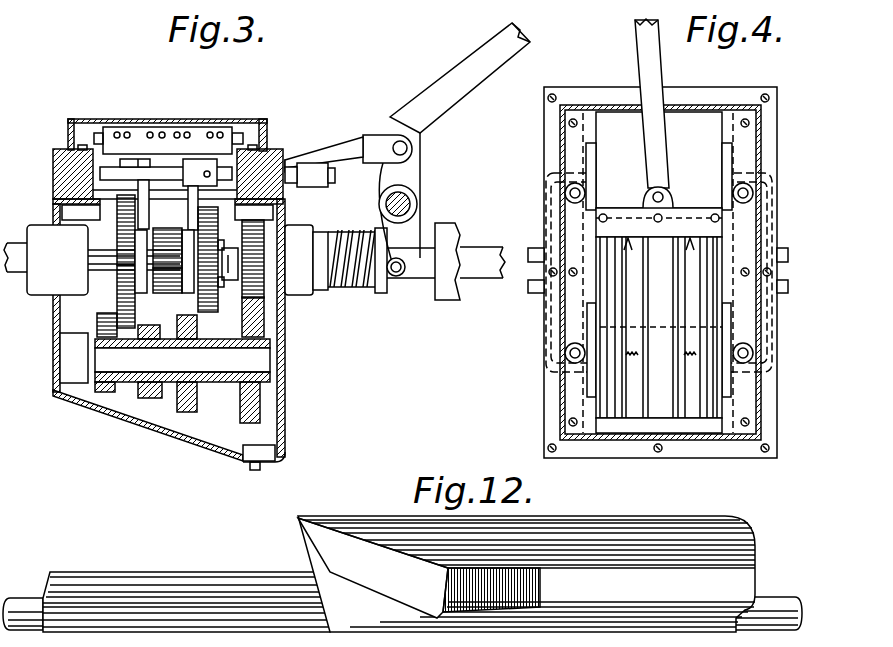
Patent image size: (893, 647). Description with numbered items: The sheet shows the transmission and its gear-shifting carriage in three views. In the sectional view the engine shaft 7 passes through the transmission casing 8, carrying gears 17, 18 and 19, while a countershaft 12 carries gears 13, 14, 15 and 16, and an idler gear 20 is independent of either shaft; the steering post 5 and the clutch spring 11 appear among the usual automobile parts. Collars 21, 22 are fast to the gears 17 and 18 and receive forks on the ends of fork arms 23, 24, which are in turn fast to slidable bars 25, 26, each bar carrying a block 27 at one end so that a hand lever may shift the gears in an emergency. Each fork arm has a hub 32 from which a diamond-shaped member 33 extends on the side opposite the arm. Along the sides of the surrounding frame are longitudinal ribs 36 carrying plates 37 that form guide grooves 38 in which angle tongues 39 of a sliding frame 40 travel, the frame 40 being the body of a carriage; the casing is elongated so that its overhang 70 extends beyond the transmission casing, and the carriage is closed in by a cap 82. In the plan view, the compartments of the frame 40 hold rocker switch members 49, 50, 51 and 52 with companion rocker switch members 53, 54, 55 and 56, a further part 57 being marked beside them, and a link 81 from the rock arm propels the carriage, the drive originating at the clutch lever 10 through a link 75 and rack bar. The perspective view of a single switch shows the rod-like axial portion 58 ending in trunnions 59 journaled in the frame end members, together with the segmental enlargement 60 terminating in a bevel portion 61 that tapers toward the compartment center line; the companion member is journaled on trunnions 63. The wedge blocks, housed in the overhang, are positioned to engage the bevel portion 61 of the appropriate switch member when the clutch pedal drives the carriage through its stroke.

In FIG. 3, the steering post 5 is at (143, 117).
In FIG. 3, the engine shaft 7 is at (482, 262).
In FIG. 3, the transmission casing 8 is at (284, 308).
In FIG. 3, the clutch lever 10 is at (455, 98).
In FIG. 3, the clutch spring 11 is at (345, 288).
In FIG. 3, the countershaft 12 is at (143, 357).
In FIG. 3, the gear 13 is at (105, 392).
In FIG. 3, the gear 14 is at (150, 398).
In FIG. 3, the gear 15 is at (188, 412).
In FIG. 3, the gear 16 is at (257, 407).
In FIG. 3, the gear 17 is at (118, 300).
In FIG. 3, the gear 18 is at (208, 318).
In FIG. 3, the gear 19 is at (262, 260).
In FIG. 3, the idler gear 20 is at (97, 322).
In FIG. 3, the collar 21 is at (140, 272).
In FIG. 3, the collar 22 is at (185, 250).
In FIG. 3, the fork arm 23 is at (135, 215).
In FIG. 3, the fork arm 24 is at (195, 222).
In FIG. 4, the slidable bar 25 is at (536, 248).
In FIG. 3, the slidable bar 26 is at (53, 200).
In FIG. 4, the slidable bar 26 is at (537, 293).
In FIG. 3, the block 27 is at (312, 172).
In FIG. 3, the hub 32 is at (202, 165).
In FIG. 3, the member 33 is at (143, 155).
In FIG. 3, the longitudinal rib 36 is at (53, 162).
In FIG. 3, the plate 37 is at (68, 127).
In FIG. 3, the guide groove 38 is at (93, 150).
In FIG. 3, the angle tongue 39 is at (242, 130).
In FIG. 3, the frame 40 is at (233, 130).
In FIG. 4, the frame 40 is at (690, 213).
In FIG. 4, the rocker switch member 49 is at (712, 405).
In FIG. 12, the rocker switch member 49 is at (526, 574).
In FIG. 4, the rocker switch member 50 is at (710, 405).
In FIG. 4, the rocker switch member 51 is at (643, 415).
In FIG. 4, the rocker switch member 52 is at (620, 395).
In FIG. 4, the rocker switch member 53 is at (700, 410).
In FIG. 4, the rocker switch member 54 is at (680, 415).
In FIG. 4, the rocker switch member 55 is at (650, 415).
In FIG. 4, the rocker switch member 56 is at (607, 415).
In FIG. 4, the blade 57 is at (630, 360).
In FIG. 12, the axial portion 58 is at (175, 585).
In FIG. 3, the trunnion 59 is at (127, 133).
In FIG. 12, the trunnion 59 is at (17, 612).
In FIG. 12, the segmental enlargement 60 is at (400, 533).
In FIG. 12, the bevel portion 61 is at (419, 568).
In FIG. 3, the trunnion 63 is at (115, 133).
In FIG. 4, the overhang 70 is at (547, 378).
In FIG. 3, the link 75 is at (345, 143).
In FIG. 4, the link 81 is at (648, 60).
In FIG. 3, the cap 82 is at (268, 148).
In FIG. 4, the cap 82 is at (562, 147).